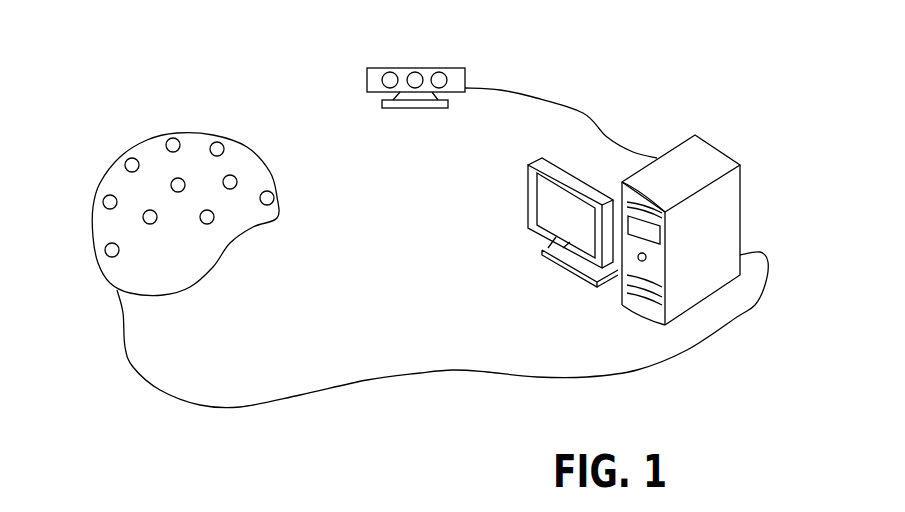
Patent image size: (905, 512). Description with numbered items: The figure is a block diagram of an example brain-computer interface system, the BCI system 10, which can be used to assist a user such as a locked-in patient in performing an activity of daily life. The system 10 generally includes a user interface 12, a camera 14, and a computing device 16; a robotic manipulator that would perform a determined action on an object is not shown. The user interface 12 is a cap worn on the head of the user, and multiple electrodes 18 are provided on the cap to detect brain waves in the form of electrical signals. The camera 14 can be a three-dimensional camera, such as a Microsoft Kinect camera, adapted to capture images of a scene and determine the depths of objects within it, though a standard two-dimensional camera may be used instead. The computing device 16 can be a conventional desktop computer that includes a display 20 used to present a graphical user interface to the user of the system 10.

The BCI system 10 is at (82, 55).
The user interface 12 is at (211, 186).
The camera 14 is at (483, 63).
The computing device 16 is at (780, 186).
The electrodes 18 is at (132, 165).
The display 20 is at (533, 213).